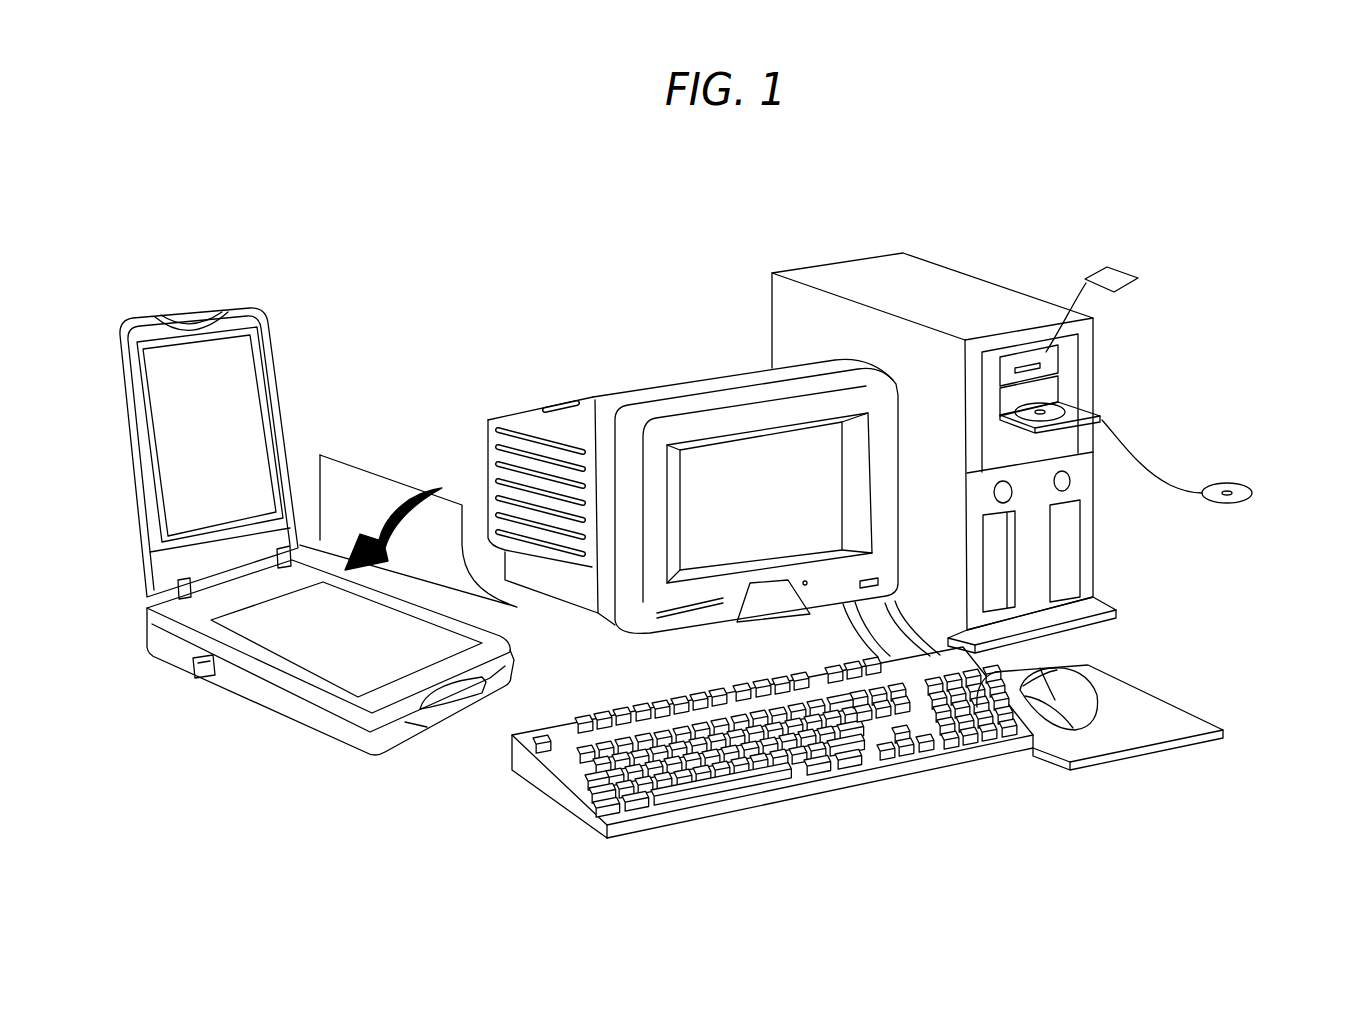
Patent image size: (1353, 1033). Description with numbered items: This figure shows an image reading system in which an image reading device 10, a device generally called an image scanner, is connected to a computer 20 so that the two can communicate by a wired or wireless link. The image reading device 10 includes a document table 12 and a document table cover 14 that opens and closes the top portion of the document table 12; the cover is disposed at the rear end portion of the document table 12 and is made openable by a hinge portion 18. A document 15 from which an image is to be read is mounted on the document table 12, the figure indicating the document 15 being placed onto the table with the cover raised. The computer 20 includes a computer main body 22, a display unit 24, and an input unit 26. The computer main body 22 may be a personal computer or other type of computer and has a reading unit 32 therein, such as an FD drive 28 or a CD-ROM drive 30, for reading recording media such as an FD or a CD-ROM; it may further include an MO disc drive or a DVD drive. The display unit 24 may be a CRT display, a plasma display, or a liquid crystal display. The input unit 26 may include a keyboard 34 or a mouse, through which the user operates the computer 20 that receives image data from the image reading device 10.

The image reading device 10 is at (226, 292).
The document table 12 is at (205, 606).
The document table cover 14 is at (266, 403).
The document 15 is at (398, 480).
The hinge portion 18 is at (184, 580).
The computer 20 is at (931, 228).
The computer main body 22 is at (833, 271).
The display unit 24 is at (675, 385).
The input unit 26 is at (1098, 845).
The FD drive 28 is at (1041, 361).
The CD-ROM drive 30 is at (1052, 404).
The reading unit 32 is at (950, 752).
The keyboard 34 is at (1068, 716).
The floppy disk FD is at (1110, 267).
The CD-ROM disc CD-ROM is at (1225, 504).